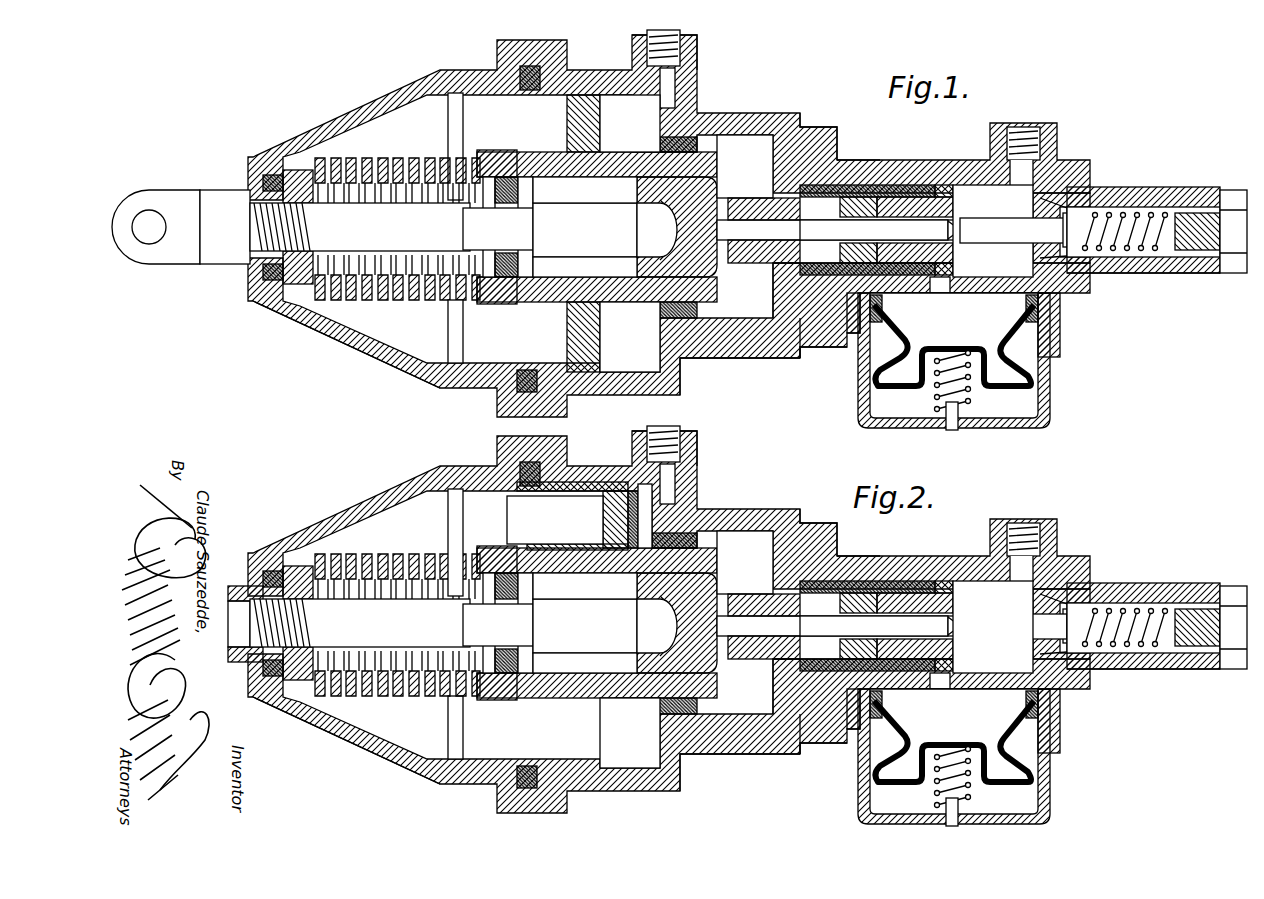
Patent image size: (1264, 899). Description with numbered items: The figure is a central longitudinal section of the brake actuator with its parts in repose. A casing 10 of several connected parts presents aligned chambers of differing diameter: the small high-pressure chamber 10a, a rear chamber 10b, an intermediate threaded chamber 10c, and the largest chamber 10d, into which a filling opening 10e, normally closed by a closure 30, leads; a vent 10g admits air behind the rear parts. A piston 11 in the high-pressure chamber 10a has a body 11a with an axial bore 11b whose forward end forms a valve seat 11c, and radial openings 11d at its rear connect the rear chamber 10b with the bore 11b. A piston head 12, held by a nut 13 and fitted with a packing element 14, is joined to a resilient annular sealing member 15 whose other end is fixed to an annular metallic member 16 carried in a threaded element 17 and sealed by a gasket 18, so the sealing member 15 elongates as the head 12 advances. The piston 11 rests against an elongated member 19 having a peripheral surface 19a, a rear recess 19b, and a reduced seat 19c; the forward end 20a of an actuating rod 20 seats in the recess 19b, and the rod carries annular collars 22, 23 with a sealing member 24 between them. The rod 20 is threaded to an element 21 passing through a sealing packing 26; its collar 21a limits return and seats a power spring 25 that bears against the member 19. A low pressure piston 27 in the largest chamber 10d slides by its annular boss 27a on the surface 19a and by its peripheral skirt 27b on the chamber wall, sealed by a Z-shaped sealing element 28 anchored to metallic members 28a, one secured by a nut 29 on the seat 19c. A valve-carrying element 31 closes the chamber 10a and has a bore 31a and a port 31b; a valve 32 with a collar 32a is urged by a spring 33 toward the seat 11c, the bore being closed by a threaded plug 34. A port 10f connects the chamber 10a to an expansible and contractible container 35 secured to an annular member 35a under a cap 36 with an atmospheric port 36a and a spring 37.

In FIG. 1, the casing 10 is at (437, 72).
In FIG. 2, the casing 10 is at (669, 622).
In FIG. 1, the high-pressure chamber 10a is at (990, 278).
In FIG. 2, the high-pressure chamber 10a is at (993, 627).
In FIG. 1, the chamber 10b is at (772, 318).
In FIG. 2, the chamber 10b is at (769, 686).
In FIG. 1, the chamber 10c is at (815, 349).
In FIG. 2, the chamber 10c is at (823, 757).
In FIG. 1, the chamber 10d is at (662, 362).
In FIG. 2, the chamber 10d is at (664, 740).
In FIG. 1, the filling opening 10e is at (697, 50).
In FIG. 2, the filling opening 10e is at (689, 467).
In FIG. 1, the port 10f is at (940, 293).
In FIG. 2, the port 10f is at (949, 695).
In FIG. 1, the vent 10g is at (400, 368).
In FIG. 2, the vent 10g is at (346, 752).
In FIG. 1, the piston 11 is at (740, 263).
In FIG. 2, the piston 11 is at (838, 606).
In FIG. 1, the body 11a is at (745, 200).
In FIG. 2, the body 11a is at (764, 626).
In FIG. 1, the bore 11b is at (874, 230).
In FIG. 2, the bore 11b is at (874, 628).
In FIG. 1, the valve seat 11c is at (962, 225).
In FIG. 2, the valve seat 11c is at (976, 613).
In FIG. 1, the radial openings 11d is at (740, 175).
In FIG. 2, the radial openings 11d is at (745, 605).
In FIG. 1, the piston head 12 is at (900, 185).
In FIG. 2, the piston head 12 is at (875, 602).
In FIG. 1, the nut 13 is at (945, 197).
In FIG. 2, the nut 13 is at (927, 596).
In FIG. 1, the packing element 14 is at (940, 185).
In FIG. 2, the packing element 14 is at (924, 650).
In FIG. 1, the annular sealing member 15 is at (858, 197).
In FIG. 2, the annular sealing member 15 is at (860, 593).
In FIG. 1, the annular metallic member 16 is at (797, 350).
In FIG. 2, the annular metallic member 16 is at (787, 746).
In FIG. 1, the element 17 is at (800, 125).
In FIG. 2, the element 17 is at (819, 526).
In FIG. 1, the gasket 18 is at (832, 160).
In FIG. 1, the member 19 is at (652, 205).
In FIG. 2, the member 19 is at (700, 608).
In FIG. 1, the peripheral surface 19a is at (510, 305).
In FIG. 2, the peripheral surface 19a is at (497, 546).
In FIG. 1, the recess 19b is at (585, 226).
In FIG. 2, the recess 19b is at (585, 625).
In FIG. 1, the seat 19c is at (680, 245).
In FIG. 2, the seat 19c is at (668, 626).
In FIG. 1, the actuating rod 20 is at (360, 227).
In FIG. 2, the actuating rod 20 is at (360, 623).
In FIG. 1, the forward end 20a is at (641, 230).
In FIG. 2, the forward end 20a is at (651, 626).
In FIG. 1, the element 21 is at (225, 262).
In FIG. 2, the element 21 is at (239, 643).
In FIG. 1, the collar 21a is at (300, 170).
In FIG. 2, the collar 21a is at (308, 584).
In FIG. 1, the annular collar 22 is at (522, 222).
In FIG. 2, the annular collar 22 is at (498, 623).
In FIG. 1, the annular collar 23 is at (540, 234).
In FIG. 2, the annular collar 23 is at (583, 626).
In FIG. 1, the sealing member 24 is at (505, 152).
In FIG. 2, the sealing member 24 is at (472, 610).
In FIG. 1, the power spring 25 is at (393, 300).
In FIG. 2, the power spring 25 is at (397, 640).
In FIG. 1, the sealing packing 26 is at (272, 282).
In FIG. 2, the sealing packing 26 is at (269, 659).
In FIG. 1, the low pressure piston 27 is at (590, 120).
In FIG. 2, the low pressure piston 27 is at (559, 520).
In FIG. 1, the annular boss 27a is at (490, 152).
In FIG. 2, the annular boss 27a is at (522, 704).
In FIG. 1, the peripheral skirt 27b is at (475, 302).
In FIG. 2, the peripheral skirt 27b is at (504, 629).
In FIG. 1, the sealing element 28 is at (600, 150).
In FIG. 2, the sealing element 28 is at (597, 595).
In FIG. 1, the metallic members 28a is at (700, 148).
In FIG. 2, the metallic members 28a is at (638, 603).
In FIG. 1, the nut 29 is at (730, 358).
In FIG. 2, the nut 29 is at (744, 637).
In FIG. 1, the closure 30 is at (682, 48).
In FIG. 2, the closure 30 is at (686, 443).
In FIG. 1, the valve-carrying element 31 is at (1140, 187).
In FIG. 2, the valve-carrying element 31 is at (1143, 641).
In FIG. 1, the bore 31a is at (1160, 273).
In FIG. 2, the bore 31a is at (1143, 692).
In FIG. 1, the port 31b is at (1070, 200).
In FIG. 2, the port 31b is at (1053, 624).
In FIG. 1, the valve 32 is at (1013, 231).
In FIG. 2, the valve 32 is at (1013, 628).
In FIG. 1, the collar 32a is at (1072, 250).
In FIG. 2, the collar 32a is at (1096, 594).
In FIG. 1, the spring 33 is at (1160, 218).
In FIG. 2, the spring 33 is at (1136, 661).
In FIG. 1, the threaded plug 34 is at (1240, 232).
In FIG. 2, the threaded plug 34 is at (1211, 649).
In FIG. 1, the expansible and contractible container 35 is at (882, 340).
In FIG. 2, the expansible and contractible container 35 is at (954, 741).
In FIG. 1, the annular member 35a is at (1062, 320).
In FIG. 2, the annular member 35a is at (977, 721).
In FIG. 1, the cap 36 is at (1050, 408).
In FIG. 2, the cap 36 is at (979, 756).
In FIG. 1, the port 36a is at (956, 428).
In FIG. 2, the port 36a is at (983, 811).
In FIG. 1, the spring 37 is at (970, 396).
In FIG. 2, the spring 37 is at (953, 777).